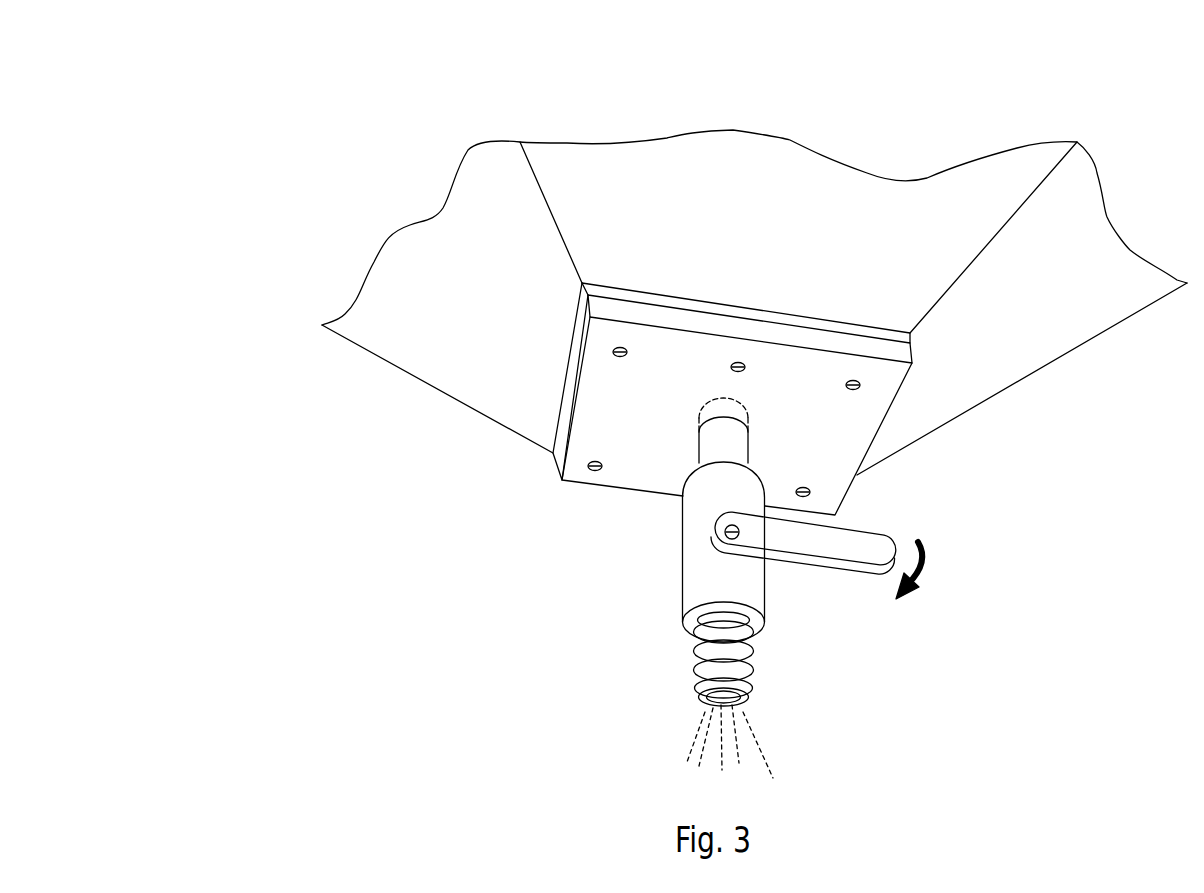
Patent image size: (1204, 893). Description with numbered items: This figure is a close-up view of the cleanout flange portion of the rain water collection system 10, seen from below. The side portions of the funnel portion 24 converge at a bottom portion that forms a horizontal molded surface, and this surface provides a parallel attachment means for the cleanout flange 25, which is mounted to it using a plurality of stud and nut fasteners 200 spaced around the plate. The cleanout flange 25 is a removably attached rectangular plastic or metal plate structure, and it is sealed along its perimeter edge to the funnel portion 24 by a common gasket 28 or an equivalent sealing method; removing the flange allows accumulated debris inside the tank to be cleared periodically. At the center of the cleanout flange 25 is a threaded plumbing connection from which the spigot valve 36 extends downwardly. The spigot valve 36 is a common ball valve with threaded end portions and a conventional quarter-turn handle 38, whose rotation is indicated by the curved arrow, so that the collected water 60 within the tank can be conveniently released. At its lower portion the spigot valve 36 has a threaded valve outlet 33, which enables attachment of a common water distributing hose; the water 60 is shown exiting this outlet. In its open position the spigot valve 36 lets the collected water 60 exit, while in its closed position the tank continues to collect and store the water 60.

The rain water collection system 10 is at (220, 137).
The funnel portion 24 is at (993, 227).
The cleanout flange 25 is at (695, 318).
The gasket 28 is at (812, 322).
The threaded valve outlet 33 is at (752, 677).
The spigot valve 36 is at (757, 592).
The quarter-turn handle 38 is at (881, 538).
The water 60 is at (735, 748).
The stud and nut fasteners 200 is at (590, 462).